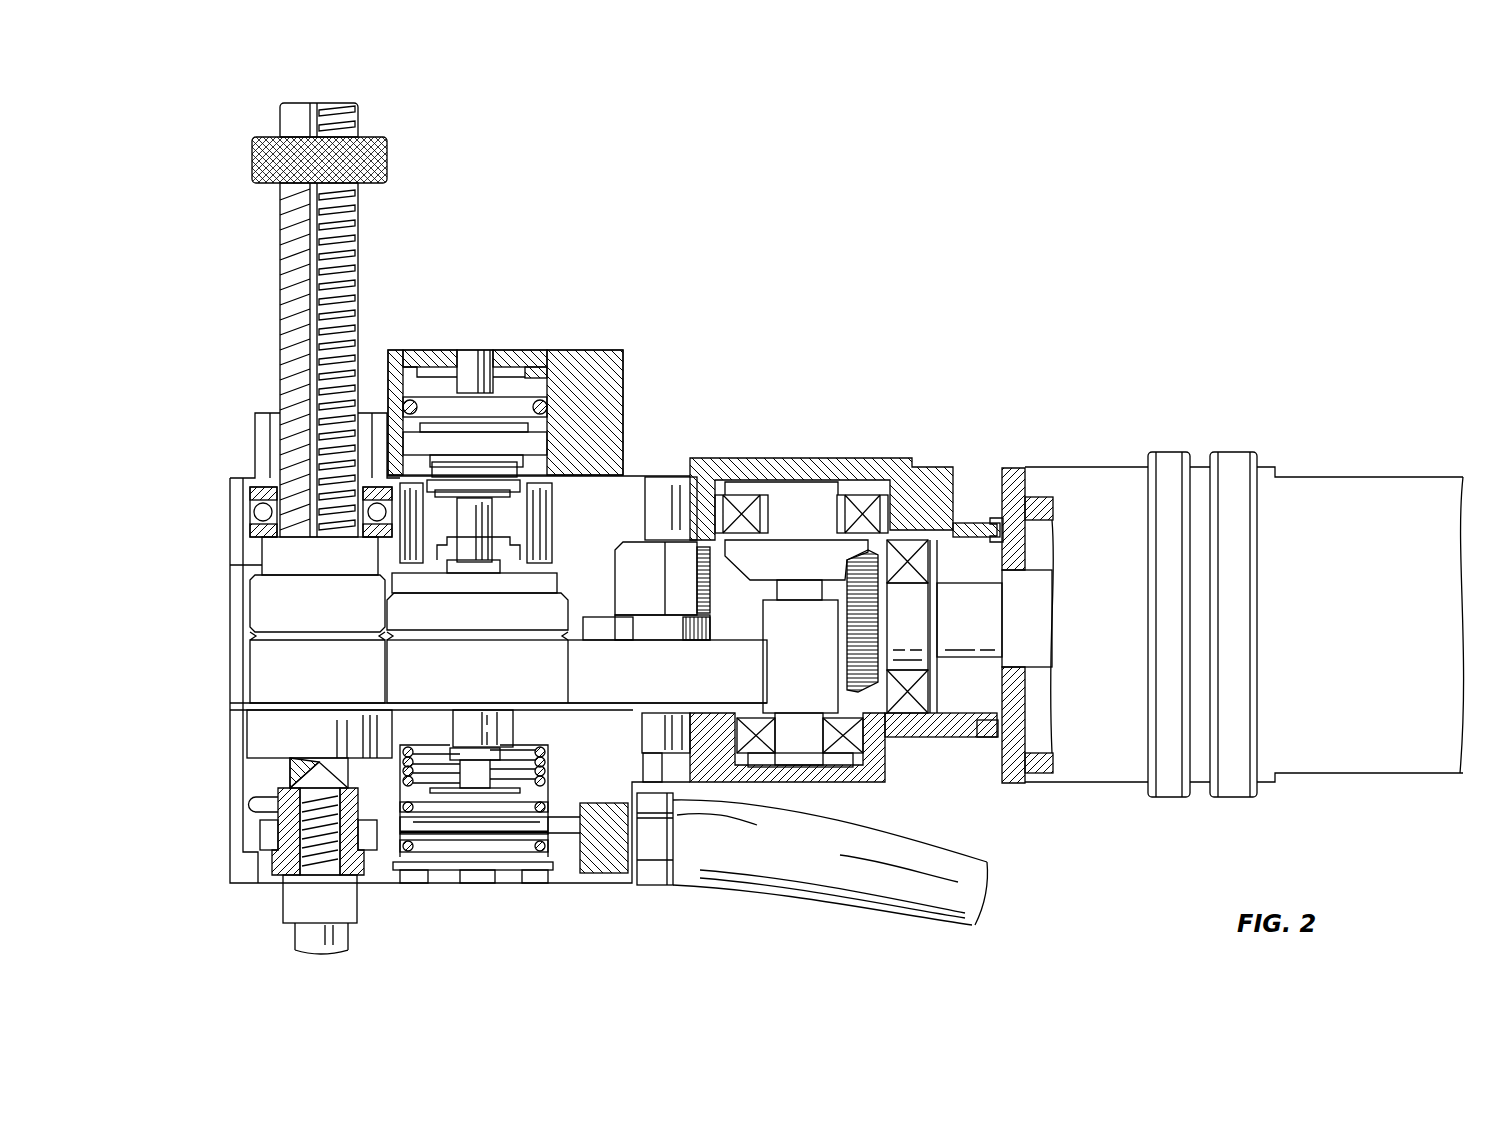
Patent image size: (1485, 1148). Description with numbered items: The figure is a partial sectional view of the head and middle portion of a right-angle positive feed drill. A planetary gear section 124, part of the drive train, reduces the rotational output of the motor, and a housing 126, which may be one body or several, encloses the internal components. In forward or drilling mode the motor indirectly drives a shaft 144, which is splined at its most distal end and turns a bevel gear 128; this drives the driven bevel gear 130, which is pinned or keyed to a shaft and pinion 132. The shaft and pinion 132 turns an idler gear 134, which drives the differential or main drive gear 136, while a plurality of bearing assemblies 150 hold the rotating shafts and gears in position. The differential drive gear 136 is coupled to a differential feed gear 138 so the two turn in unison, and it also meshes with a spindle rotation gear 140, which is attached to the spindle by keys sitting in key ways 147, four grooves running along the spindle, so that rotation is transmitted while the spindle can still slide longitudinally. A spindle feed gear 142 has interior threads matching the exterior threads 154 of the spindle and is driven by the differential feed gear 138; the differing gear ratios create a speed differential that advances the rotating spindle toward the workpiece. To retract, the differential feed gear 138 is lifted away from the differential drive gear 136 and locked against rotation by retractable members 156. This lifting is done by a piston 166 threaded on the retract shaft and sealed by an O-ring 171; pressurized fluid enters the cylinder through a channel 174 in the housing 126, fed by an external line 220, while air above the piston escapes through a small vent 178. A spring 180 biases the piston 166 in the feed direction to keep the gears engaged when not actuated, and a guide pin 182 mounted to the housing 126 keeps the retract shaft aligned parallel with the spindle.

The planetary gear section 124 is at (1090, 338).
The housing 126 is at (585, 365).
The bevel gear 128 is at (880, 700).
The driven bevel gear 130 is at (790, 570).
The shaft and pinion 132 is at (833, 750).
The idler gear 134 is at (645, 660).
The differential drive gear 136 is at (533, 663).
The differential feed gear 138 is at (533, 607).
The spindle rotation gear 140 is at (263, 668).
The spindle feed gear 142 is at (263, 608).
The shaft 144 is at (992, 628).
The key ways 147 is at (313, 267).
The bearing assemblies 150 is at (912, 573).
The exterior threads 154 is at (295, 308).
The members 156 is at (553, 495).
The piston 166 is at (465, 820).
The O-ring 171 is at (406, 808).
The channel 174 is at (566, 822).
The vent 178 is at (522, 731).
The spring 180 is at (543, 772).
The guide pin 182 is at (467, 360).
The external line 220 is at (873, 850).